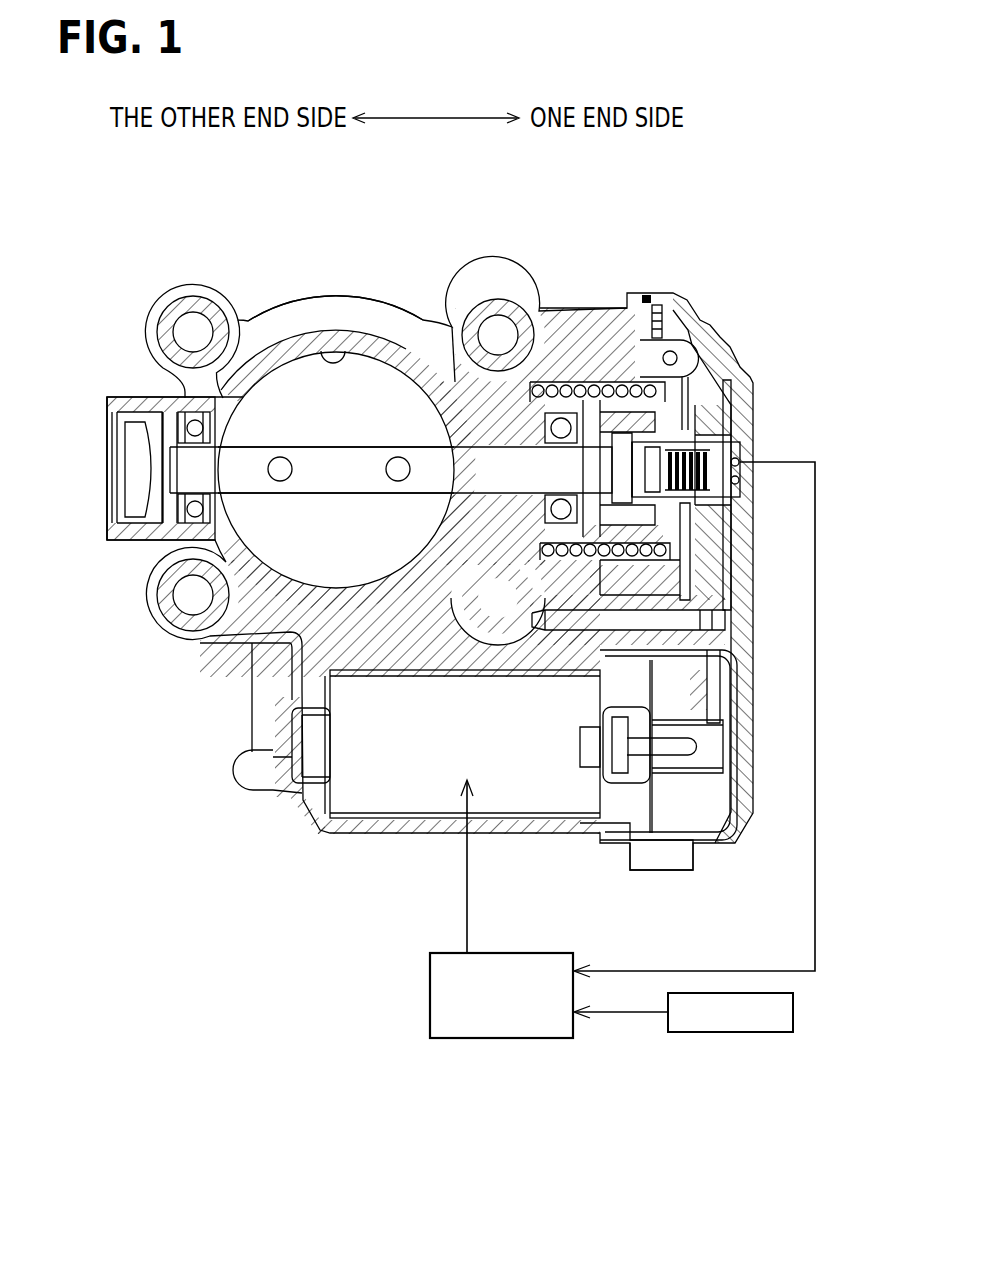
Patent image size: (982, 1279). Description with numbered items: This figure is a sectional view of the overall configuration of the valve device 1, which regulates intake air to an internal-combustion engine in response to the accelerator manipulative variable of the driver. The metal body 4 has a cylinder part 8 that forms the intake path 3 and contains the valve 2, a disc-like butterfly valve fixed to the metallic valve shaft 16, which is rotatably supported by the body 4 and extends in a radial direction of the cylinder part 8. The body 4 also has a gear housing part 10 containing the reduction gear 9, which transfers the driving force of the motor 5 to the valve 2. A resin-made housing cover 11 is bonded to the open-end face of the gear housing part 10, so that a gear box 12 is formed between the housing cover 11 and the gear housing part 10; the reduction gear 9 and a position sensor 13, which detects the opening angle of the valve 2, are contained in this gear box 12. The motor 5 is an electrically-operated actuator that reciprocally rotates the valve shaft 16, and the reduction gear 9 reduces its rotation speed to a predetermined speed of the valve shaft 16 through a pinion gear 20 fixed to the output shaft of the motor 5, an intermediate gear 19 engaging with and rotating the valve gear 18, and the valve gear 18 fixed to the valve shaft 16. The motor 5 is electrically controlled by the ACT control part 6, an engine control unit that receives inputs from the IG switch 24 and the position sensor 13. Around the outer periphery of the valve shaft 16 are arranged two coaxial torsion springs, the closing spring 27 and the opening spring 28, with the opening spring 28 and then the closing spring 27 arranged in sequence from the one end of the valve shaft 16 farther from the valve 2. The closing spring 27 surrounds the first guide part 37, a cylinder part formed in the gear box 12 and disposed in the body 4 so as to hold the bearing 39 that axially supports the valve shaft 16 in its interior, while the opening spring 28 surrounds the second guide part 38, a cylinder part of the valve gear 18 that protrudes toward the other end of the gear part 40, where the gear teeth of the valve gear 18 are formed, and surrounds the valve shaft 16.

The valve device 1 is at (118, 255).
The valve 2 is at (268, 525).
The intake path 3 is at (345, 347).
The body 4 is at (223, 617).
The motor 5 is at (388, 787).
The ACT control part 6 is at (485, 1038).
The cylinder part 8 is at (300, 347).
The reduction gear 9 is at (688, 398).
The gear housing part 10 is at (590, 335).
The housing cover 11 is at (713, 357).
The gear box 12 is at (710, 798).
The position sensor 13 is at (695, 428).
The valve shaft 16 is at (425, 340).
The valve gear 18 is at (707, 493).
The intermediate gear 19 is at (728, 614).
The pinion gear 20 is at (710, 733).
The IG switch 24 is at (732, 1032).
The closing spring 27 is at (530, 427).
The opening spring 28 is at (650, 300).
The first guide part 37 is at (543, 387).
The second guide part 38 is at (620, 380).
The bearing 39 is at (477, 453).
The gear part 40 is at (657, 567).